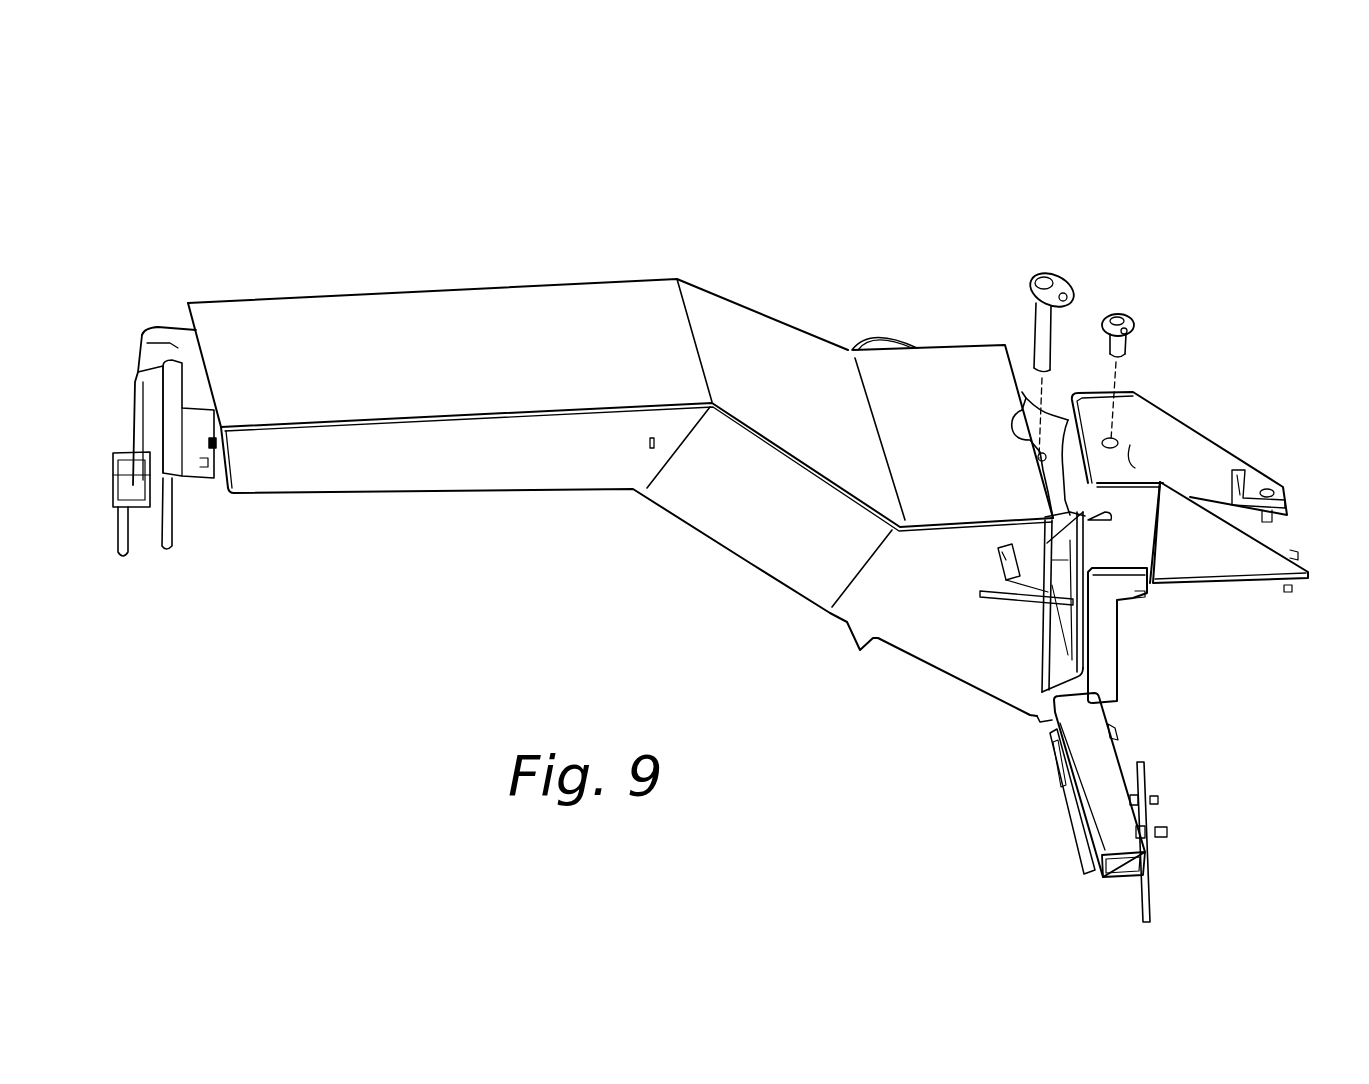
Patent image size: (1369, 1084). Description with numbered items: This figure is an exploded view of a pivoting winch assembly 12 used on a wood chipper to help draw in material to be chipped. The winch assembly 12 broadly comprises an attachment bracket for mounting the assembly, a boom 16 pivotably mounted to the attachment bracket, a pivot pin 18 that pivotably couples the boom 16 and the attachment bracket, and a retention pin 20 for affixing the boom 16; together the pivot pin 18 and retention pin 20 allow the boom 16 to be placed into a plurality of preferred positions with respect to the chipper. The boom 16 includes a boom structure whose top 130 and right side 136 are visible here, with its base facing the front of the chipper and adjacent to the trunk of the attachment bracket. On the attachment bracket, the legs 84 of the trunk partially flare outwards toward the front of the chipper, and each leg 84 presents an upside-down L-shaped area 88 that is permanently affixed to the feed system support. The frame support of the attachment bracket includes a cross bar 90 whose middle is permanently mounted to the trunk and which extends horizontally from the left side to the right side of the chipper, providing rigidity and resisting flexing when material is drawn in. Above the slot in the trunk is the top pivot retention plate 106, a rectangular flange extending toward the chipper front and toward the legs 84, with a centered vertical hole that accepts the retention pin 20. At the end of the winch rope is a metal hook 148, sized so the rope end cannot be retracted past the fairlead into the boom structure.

The pivoting winch assembly 12 is at (733, 138).
The boom 16 is at (873, 807).
The pivot pin 18 is at (1032, 282).
The retention pin 20 is at (1130, 320).
The legs of the trunk 84 is at (1229, 537).
The upside-down L-shaped area 88 is at (1140, 605).
The cross bar 90 is at (1105, 777).
The top pivot retention plate 106 is at (1120, 468).
The top of the boom structure 130 is at (620, 405).
The right side of the boom structure 136 is at (629, 561).
The metal hook 148 is at (134, 560).